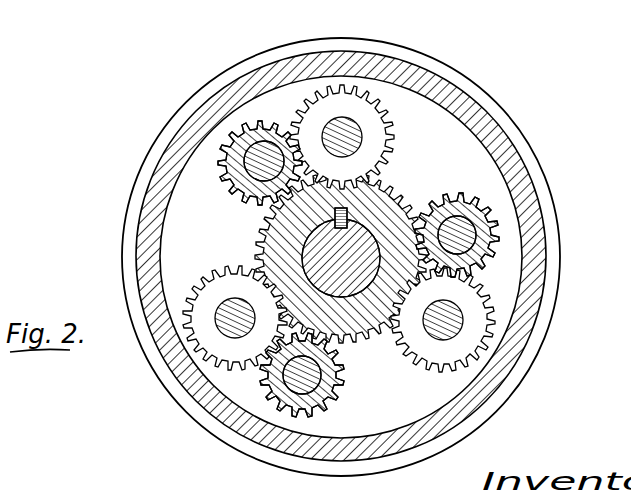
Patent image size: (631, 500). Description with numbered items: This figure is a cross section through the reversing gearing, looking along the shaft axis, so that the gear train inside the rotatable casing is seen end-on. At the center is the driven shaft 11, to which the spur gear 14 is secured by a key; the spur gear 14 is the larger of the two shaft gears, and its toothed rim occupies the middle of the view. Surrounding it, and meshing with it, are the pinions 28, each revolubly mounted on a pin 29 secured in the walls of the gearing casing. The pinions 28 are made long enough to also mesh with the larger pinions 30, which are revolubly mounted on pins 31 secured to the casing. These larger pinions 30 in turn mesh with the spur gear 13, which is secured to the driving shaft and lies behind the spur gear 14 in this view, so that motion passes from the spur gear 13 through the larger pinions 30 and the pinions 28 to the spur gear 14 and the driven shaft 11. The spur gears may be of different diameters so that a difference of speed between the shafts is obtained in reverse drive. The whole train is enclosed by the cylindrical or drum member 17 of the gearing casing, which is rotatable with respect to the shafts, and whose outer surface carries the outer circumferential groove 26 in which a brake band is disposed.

The driven shaft 11 is at (312, 250).
The spur gear 13 is at (408, 207).
The spur gear 14 is at (390, 190).
The cylindrical or drum member 17 is at (268, 440).
The outer circumferential groove 26 is at (522, 157).
The pinions 28 is at (220, 157).
The pins 29 is at (270, 145).
The larger pinions 30 is at (375, 142).
The pins 31 is at (430, 327).